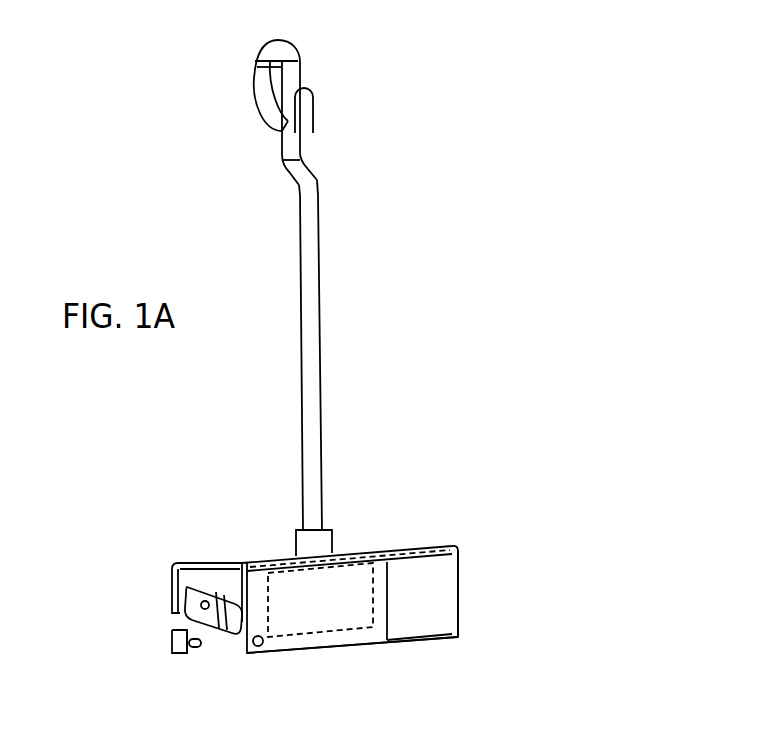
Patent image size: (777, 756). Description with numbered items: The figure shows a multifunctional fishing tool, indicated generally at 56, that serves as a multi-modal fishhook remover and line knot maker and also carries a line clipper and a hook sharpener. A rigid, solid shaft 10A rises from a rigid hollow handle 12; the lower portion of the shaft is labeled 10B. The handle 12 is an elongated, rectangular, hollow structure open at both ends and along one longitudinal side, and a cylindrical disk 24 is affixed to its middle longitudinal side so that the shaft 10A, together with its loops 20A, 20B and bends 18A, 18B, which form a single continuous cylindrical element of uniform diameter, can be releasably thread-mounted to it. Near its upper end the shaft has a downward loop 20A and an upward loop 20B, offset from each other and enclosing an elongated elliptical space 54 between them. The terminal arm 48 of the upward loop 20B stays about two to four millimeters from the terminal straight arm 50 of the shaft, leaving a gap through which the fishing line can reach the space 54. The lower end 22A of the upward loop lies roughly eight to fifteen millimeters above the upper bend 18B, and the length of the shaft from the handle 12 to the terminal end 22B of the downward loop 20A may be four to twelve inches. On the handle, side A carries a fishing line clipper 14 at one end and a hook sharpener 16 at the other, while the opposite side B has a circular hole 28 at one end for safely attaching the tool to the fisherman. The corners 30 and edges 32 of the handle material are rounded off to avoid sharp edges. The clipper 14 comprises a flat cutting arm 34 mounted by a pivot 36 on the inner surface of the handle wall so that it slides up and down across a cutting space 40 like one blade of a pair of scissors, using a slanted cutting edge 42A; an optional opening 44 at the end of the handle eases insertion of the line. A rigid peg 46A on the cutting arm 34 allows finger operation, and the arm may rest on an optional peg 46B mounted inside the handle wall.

The shaft 10A is at (307, 257).
The lower rod portion 10B is at (312, 432).
The handle 12 is at (141, 519).
The fishing line clipper 14 is at (208, 580).
The hook sharpener 16 is at (317, 590).
The bend 18A is at (300, 185).
The upper bend 18B is at (298, 162).
The downward loop 20A is at (280, 55).
The upward loop 20B is at (293, 118).
The lower end of the upward loop 22A is at (293, 132).
The terminal end of the downward loop 22B is at (283, 43).
The cylindrical disk 24 is at (332, 538).
The circular hole 28 is at (259, 647).
The corners 30 is at (246, 652).
The edges 32 is at (382, 648).
The cutting arm 34 is at (198, 593).
The pivot 36 is at (232, 606).
The cutting space 40 is at (192, 628).
The slanted cutting edge 42A is at (222, 633).
The opening 44 is at (178, 618).
The peg 46A is at (206, 631).
The peg 46B is at (195, 648).
The terminal arm 48 is at (307, 98).
The terminal straight arm 50 is at (290, 80).
The elliptical space 54 is at (273, 70).
The hanger 56 is at (135, 105).
The side A is at (183, 583).
The side B is at (415, 610).